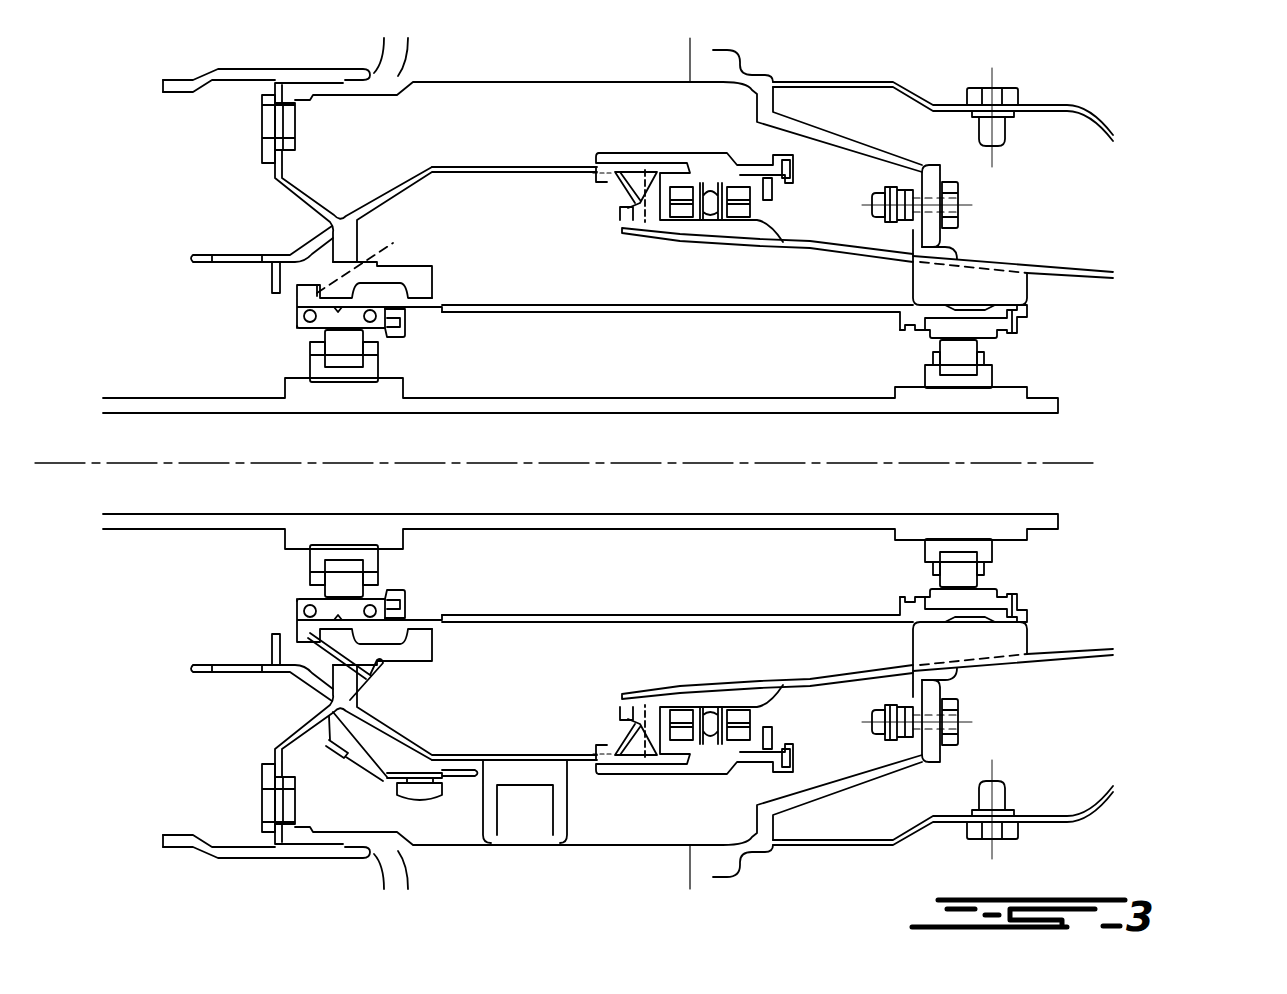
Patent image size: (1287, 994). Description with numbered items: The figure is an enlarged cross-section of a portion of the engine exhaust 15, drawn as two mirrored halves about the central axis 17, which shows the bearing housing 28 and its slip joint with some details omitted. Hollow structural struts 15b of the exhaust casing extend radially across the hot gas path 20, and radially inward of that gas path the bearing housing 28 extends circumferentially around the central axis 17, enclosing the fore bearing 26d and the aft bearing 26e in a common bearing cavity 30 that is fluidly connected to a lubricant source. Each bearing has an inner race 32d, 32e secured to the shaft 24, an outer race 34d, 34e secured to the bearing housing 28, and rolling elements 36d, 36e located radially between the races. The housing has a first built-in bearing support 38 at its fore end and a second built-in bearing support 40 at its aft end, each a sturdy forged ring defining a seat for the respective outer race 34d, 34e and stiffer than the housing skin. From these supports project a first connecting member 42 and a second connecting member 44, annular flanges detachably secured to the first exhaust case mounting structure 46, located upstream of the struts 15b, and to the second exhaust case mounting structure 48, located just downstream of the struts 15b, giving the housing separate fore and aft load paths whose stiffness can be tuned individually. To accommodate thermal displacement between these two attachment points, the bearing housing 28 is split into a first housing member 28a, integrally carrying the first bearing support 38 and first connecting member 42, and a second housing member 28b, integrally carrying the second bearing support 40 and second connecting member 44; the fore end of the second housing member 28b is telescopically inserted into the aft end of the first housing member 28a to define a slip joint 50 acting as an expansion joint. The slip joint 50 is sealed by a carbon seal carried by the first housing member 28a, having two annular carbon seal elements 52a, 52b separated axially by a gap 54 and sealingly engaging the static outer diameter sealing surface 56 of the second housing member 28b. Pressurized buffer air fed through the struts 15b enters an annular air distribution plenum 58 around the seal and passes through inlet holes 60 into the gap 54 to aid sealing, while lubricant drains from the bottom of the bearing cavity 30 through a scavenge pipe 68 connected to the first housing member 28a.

The engine exhaust 15 is at (1175, 195).
The hollow structural struts 15b is at (713, 50).
The central axis 17 is at (1107, 460).
The hot gas path 20 is at (275, 51).
The shaft 24 is at (1050, 403).
The fore bearing 26d is at (277, 590).
The aft bearing 26e is at (1007, 567).
The bearing housing 28 is at (512, 168).
The first housing member 28a is at (588, 775).
The second housing member 28b is at (1095, 678).
The bearing cavity 30 is at (625, 283).
The inner race 32d is at (373, 368).
The inner race 32e is at (982, 547).
The outer race 34d is at (298, 327).
The outer race 34e is at (997, 333).
The rolling elements 36d is at (343, 585).
The rolling elements 36e is at (940, 352).
The first built-in bearing support 38 is at (355, 277).
The second built-in bearing support 40 is at (980, 277).
The first connecting member 42 is at (263, 145).
The second connecting member 44 is at (907, 230).
The first exhaust case mounting structure 46 is at (295, 145).
The second exhaust case mounting structure 48 is at (937, 167).
The slip joint 50 is at (643, 137).
The first carbon seal element 52a is at (680, 713).
The second carbon seal element 52b is at (740, 713).
The gap 54 is at (714, 215).
The static outer diameter sealing surface 56 is at (680, 220).
The annular air distribution plenum 58 is at (700, 167).
The inlet holes 60 is at (713, 183).
The scavenge pipe 68 is at (523, 822).